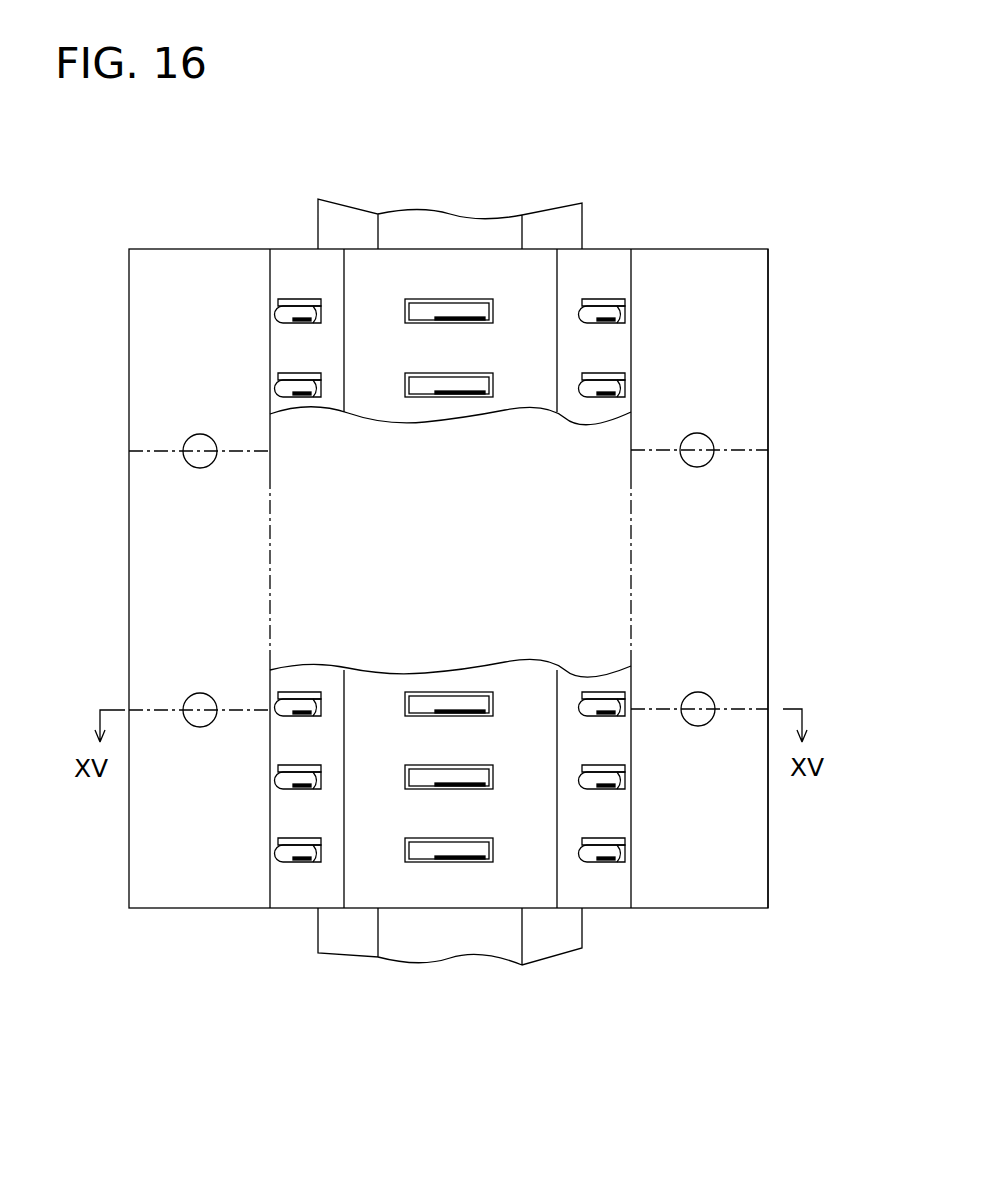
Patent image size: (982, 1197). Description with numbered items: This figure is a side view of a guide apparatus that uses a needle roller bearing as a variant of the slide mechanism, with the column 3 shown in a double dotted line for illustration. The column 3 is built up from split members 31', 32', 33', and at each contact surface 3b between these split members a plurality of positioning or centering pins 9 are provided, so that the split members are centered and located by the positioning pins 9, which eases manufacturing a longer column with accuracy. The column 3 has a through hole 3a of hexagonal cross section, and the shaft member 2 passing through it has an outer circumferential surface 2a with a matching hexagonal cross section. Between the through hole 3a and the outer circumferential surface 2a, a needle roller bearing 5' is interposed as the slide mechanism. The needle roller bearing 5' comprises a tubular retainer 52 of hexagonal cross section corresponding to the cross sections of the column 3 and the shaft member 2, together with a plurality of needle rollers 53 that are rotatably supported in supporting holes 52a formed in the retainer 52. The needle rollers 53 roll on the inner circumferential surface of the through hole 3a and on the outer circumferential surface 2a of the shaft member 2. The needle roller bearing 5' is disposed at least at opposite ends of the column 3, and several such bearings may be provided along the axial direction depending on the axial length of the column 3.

The shaft member 2 is at (584, 227).
The outer circumferential surface 2a is at (573, 937).
The column 3 is at (764, 236).
The through hole 3a is at (631, 575).
The contact surface 3b is at (175, 450).
The needle roller bearing 5' is at (529, 613).
The positioning pin 9 is at (197, 691).
The split member 31' is at (811, 350).
The split member 32' is at (811, 580).
The split member 33' is at (813, 808).
The retainer 52 is at (300, 893).
The supporting hole 52a is at (436, 380).
The needle roller 53 is at (285, 315).